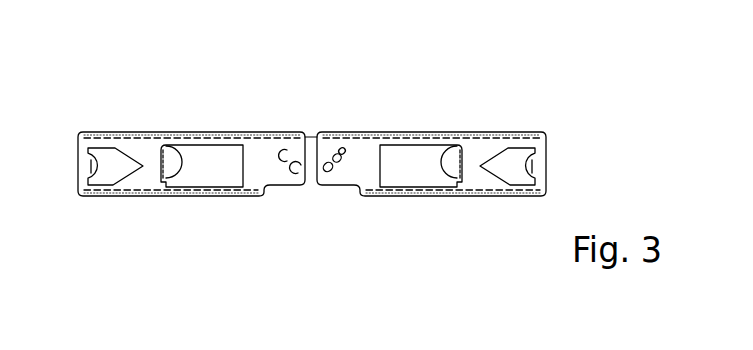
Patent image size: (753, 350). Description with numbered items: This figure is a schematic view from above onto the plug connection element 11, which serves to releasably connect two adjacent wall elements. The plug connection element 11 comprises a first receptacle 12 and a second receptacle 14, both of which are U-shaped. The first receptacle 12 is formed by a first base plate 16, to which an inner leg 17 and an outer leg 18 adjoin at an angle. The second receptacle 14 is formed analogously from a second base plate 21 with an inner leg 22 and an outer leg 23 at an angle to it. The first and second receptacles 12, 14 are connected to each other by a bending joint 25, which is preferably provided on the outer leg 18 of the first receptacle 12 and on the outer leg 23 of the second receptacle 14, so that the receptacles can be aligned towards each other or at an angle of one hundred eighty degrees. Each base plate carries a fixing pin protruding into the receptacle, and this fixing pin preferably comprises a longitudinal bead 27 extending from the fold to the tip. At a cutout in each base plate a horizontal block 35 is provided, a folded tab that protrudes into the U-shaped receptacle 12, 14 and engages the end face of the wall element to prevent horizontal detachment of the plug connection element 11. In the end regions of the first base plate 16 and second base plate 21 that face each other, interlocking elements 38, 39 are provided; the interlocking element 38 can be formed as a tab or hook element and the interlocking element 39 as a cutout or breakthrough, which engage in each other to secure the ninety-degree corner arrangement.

The plug connection element 11 is at (318, 76).
The first receptacle 12 is at (103, 104).
The second receptacle 14 is at (522, 102).
The first base plate 16 is at (149, 180).
The inner leg 17 is at (235, 133).
The outer leg 18 is at (220, 197).
The second base plate 21 is at (367, 168).
The inner leg 22 is at (482, 133).
The outer leg 23 is at (478, 197).
The bending joint 25 is at (316, 126).
The longitudinal bead 27 is at (113, 148).
The horizontal block 35 is at (183, 160).
The interlocking element 38 is at (286, 197).
The interlocking element 39 is at (336, 197).